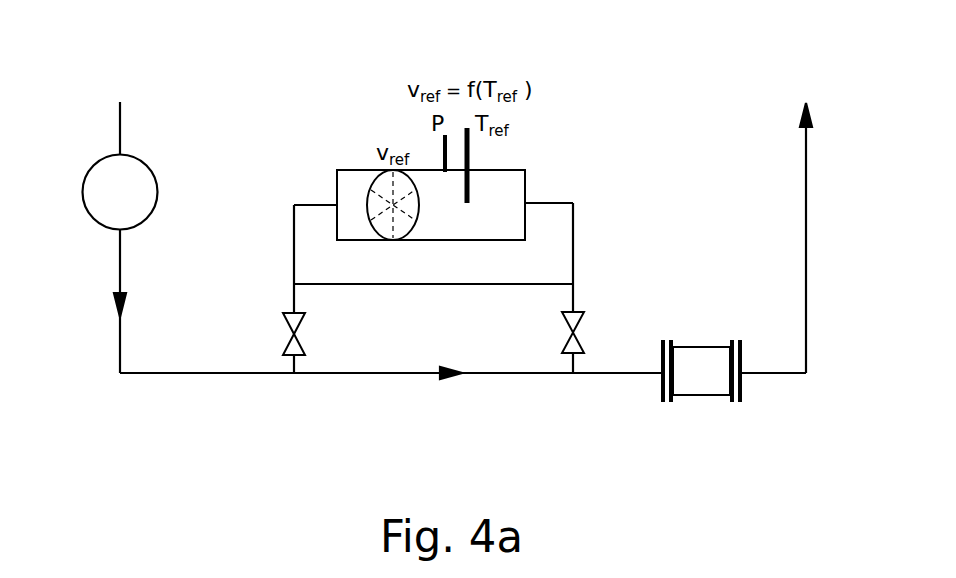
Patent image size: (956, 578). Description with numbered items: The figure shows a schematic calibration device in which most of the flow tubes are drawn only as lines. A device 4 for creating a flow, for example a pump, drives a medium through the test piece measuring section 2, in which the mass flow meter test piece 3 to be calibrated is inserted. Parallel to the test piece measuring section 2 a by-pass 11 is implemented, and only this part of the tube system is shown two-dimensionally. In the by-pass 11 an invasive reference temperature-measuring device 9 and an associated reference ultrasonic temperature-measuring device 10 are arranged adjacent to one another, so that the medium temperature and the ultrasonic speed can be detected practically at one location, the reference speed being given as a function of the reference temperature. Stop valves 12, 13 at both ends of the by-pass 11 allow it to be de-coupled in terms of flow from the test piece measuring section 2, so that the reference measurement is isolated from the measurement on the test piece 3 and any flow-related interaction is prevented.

The test piece measuring section 2 is at (778, 372).
The mass flow meter test piece 3 is at (695, 383).
The device for creating a flow 4 is at (95, 162).
The invasive reference temperature-measuring device 9 is at (468, 155).
The reference ultrasonic temperature-measuring device 10 is at (377, 183).
The by-pass 11 is at (546, 179).
The stop valve 12 is at (295, 345).
The stop valve 13 is at (572, 327).